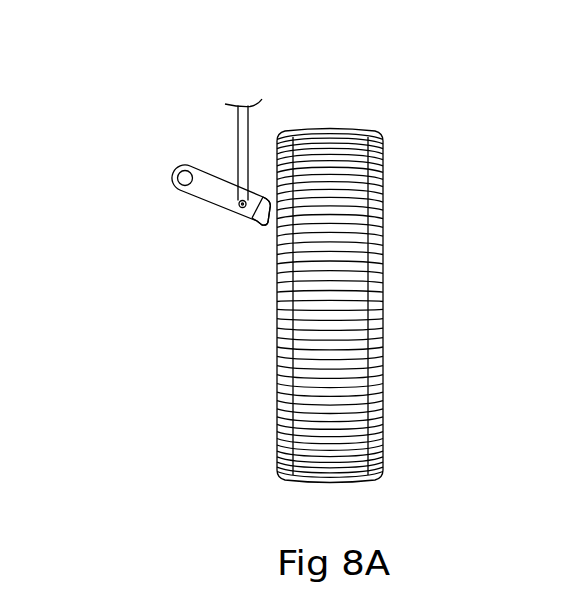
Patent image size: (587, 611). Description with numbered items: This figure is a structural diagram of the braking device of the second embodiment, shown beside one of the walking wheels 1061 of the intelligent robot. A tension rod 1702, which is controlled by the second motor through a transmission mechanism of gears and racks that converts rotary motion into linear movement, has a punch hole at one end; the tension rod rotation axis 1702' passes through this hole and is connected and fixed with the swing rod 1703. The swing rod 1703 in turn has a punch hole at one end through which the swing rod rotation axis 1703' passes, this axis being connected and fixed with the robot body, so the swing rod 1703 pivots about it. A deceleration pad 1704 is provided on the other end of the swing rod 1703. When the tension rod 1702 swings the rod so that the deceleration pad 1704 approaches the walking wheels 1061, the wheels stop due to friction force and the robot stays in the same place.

The walking wheels 1061 is at (357, 257).
The tension rod 1702 is at (212, 109).
The tension rod rotation axis 1702' is at (170, 141).
The swing rod 1703 is at (181, 219).
The swing rod rotation axis 1703' is at (113, 197).
The deceleration pad 1704 is at (260, 219).